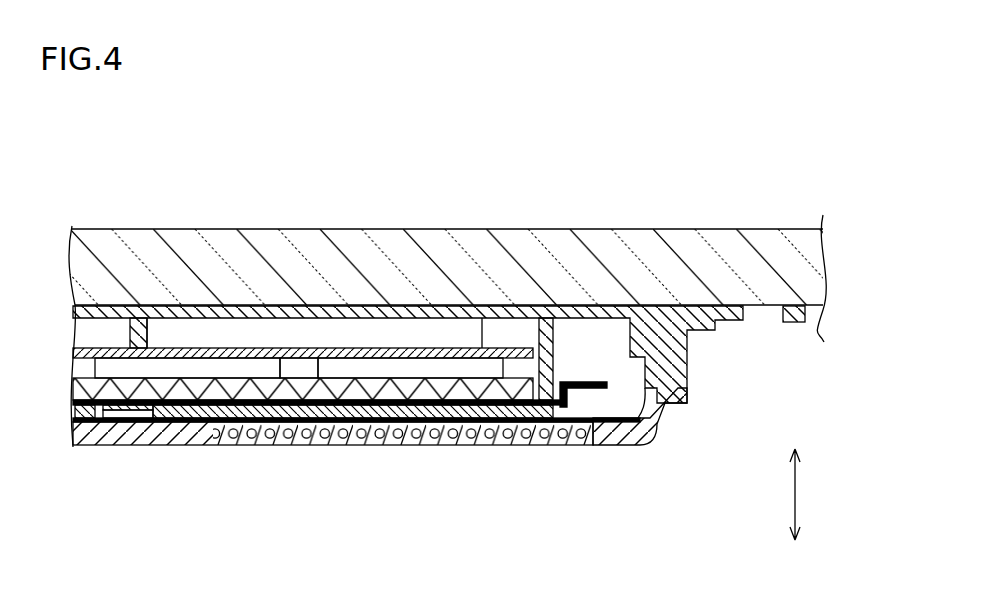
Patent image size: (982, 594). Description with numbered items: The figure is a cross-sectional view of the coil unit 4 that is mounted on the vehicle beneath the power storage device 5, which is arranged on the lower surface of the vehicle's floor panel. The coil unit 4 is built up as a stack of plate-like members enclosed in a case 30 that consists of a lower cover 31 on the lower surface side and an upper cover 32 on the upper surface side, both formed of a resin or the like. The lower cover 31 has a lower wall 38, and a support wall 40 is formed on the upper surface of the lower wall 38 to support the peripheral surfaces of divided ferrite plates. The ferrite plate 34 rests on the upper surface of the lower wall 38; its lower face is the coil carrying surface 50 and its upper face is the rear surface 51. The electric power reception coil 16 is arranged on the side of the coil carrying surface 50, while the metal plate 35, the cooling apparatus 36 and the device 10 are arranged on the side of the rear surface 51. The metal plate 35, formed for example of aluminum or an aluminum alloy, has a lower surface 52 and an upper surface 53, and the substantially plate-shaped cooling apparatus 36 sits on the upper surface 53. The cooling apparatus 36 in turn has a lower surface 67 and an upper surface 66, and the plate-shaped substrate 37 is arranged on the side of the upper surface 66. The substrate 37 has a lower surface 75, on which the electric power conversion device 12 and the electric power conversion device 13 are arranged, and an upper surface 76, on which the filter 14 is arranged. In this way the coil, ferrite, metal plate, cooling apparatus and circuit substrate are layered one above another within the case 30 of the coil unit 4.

The coil unit 4 is at (184, 140).
The power storage device 5 is at (603, 275).
The device 10 is at (299, 259).
The electric power conversion device 12 is at (262, 367).
The electric power conversion device 13 is at (338, 363).
The filter 14 is at (315, 328).
The electric power reception coil 16 is at (215, 437).
The case 30 is at (439, 423).
The lower cover 31 is at (612, 461).
The upper cover 32 is at (715, 330).
The ferrite plate 34 is at (356, 470).
The metal plate 35 is at (314, 472).
The cooling apparatus 36 is at (303, 449).
The substrate 37 is at (303, 249).
The lower wall 38 is at (590, 436).
The support wall 40 is at (546, 406).
The coil carrying surface 50 is at (447, 408).
The rear surface 51 is at (483, 404).
The lower surface 52 is at (341, 404).
The upper surface 53 is at (381, 408).
The upper surface 66 is at (306, 375).
The lower surface 67 is at (256, 404).
The lower surface 75 is at (471, 357).
The upper surface 76 is at (425, 355).